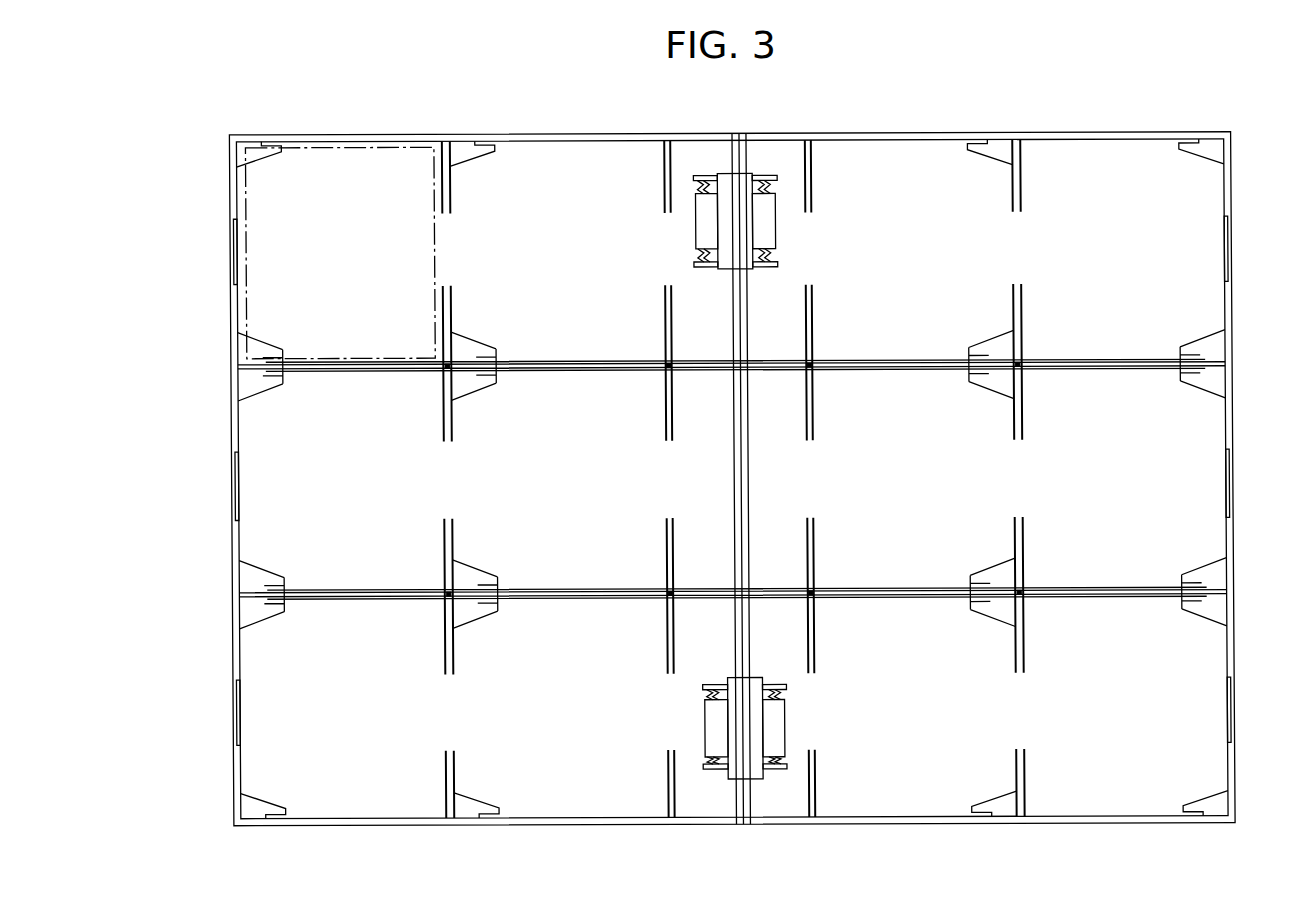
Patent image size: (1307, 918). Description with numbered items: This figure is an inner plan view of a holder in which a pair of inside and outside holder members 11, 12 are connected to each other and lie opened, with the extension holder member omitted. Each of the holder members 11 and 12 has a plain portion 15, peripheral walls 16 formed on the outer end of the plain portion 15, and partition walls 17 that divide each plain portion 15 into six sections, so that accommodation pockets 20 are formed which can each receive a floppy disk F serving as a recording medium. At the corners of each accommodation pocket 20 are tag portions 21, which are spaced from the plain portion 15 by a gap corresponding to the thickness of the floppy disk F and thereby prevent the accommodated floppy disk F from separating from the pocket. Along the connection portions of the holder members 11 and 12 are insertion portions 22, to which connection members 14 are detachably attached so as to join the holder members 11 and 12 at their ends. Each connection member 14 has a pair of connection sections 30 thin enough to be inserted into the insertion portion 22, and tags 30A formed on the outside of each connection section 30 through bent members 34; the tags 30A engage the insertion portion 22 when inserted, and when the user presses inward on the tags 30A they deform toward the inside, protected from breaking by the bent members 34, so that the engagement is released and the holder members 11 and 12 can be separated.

The inside holder member 11 is at (230, 428).
The outside holder member 12 is at (1240, 448).
The connection member 14 is at (740, 470).
The plain portion 15 is at (888, 152).
The peripheral wall 16 is at (518, 134).
The partition wall 17 is at (1023, 301).
The accommodation pocket 20 is at (360, 160).
The tag portion 21 is at (993, 343).
The insertion portion 22 is at (716, 204).
The connection section 30 is at (776, 222).
The tag 30A is at (778, 261).
The bent member 34 is at (778, 187).
The floppy disk F is at (408, 147).